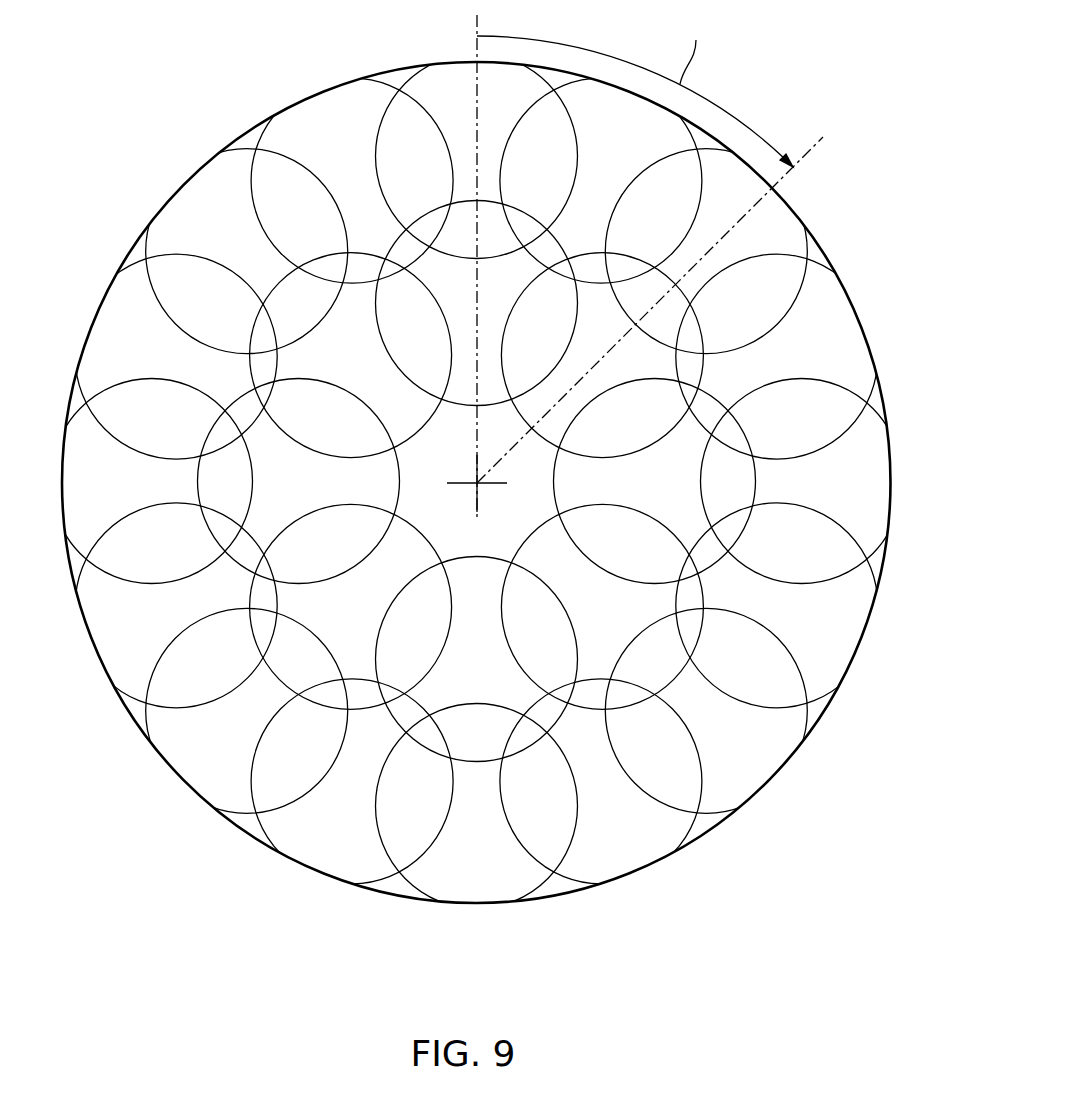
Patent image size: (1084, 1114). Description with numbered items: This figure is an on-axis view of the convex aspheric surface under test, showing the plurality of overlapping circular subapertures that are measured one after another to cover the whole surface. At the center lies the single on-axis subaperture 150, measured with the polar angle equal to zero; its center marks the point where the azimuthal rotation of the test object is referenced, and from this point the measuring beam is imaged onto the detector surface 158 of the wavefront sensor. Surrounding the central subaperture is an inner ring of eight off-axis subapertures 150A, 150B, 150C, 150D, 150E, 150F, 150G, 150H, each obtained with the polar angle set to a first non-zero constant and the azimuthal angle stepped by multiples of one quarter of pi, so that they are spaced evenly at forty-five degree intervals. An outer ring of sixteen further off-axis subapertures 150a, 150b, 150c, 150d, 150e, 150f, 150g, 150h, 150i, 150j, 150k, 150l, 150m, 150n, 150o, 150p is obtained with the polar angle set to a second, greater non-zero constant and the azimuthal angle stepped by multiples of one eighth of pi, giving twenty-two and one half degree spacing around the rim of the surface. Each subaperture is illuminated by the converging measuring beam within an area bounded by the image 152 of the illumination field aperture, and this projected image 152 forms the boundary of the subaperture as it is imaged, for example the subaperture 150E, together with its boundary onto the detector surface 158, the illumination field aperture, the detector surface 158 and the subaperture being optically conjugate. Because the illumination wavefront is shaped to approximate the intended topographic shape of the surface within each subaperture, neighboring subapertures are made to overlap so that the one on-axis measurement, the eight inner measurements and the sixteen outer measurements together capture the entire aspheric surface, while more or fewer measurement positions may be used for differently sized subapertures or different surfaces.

The subaperture 150 is at (416, 532).
The subaperture 150a is at (444, 111).
The subaperture 150b is at (583, 144).
The subaperture 150c is at (704, 234).
The subaperture 150d is at (778, 359).
The subaperture 150e is at (803, 491).
The subaperture 150f is at (789, 627).
The subaperture 150g is at (714, 754).
The subaperture 150h is at (585, 836).
The subaperture 150i is at (449, 882).
The subaperture 150j is at (300, 846).
The subaperture 150k is at (184, 762).
The subaperture 150l is at (109, 631).
The subaperture 150m is at (79, 502).
The subaperture 150n is at (98, 360).
The subaperture 150o is at (181, 239).
The subaperture 150p is at (296, 148).
The subaperture 150A is at (444, 299).
The subaperture 150B is at (573, 366).
The subaperture 150C is at (620, 502).
The subaperture 150D is at (574, 621).
The subaperture 150E is at (444, 699).
The subaperture 150F is at (307, 621).
The subaperture 150G is at (270, 494).
The subaperture 150H is at (305, 371).
The image of the illumination field aperture 152 is at (247, 177).
The detector surface 158 is at (480, 487).